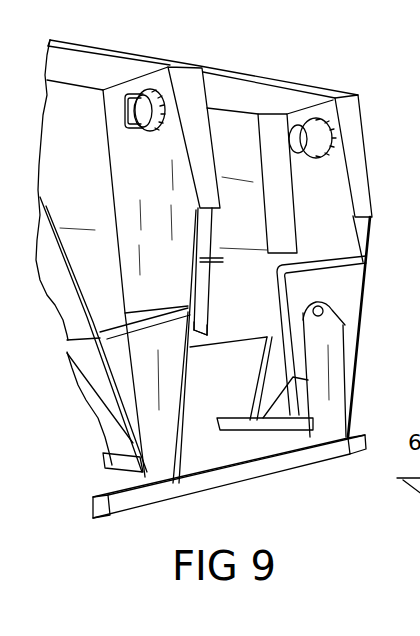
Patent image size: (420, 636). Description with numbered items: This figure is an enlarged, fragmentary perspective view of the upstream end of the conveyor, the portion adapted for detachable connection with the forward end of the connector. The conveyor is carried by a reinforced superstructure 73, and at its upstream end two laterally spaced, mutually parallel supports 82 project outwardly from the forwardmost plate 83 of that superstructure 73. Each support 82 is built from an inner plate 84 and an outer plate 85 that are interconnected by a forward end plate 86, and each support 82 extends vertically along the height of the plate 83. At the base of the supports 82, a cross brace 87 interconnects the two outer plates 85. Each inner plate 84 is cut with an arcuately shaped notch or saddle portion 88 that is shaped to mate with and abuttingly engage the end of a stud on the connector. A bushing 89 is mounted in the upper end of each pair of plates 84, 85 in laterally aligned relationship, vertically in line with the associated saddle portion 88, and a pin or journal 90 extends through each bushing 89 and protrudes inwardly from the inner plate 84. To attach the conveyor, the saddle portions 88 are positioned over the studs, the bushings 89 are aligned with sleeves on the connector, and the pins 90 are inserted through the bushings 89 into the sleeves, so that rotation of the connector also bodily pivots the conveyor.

The superstructure 73 is at (62, 338).
The support 82 is at (200, 63).
The forwardmost plate 83 is at (75, 122).
The inner plate 84 is at (340, 231).
The outer plate 85 is at (127, 188).
The forward end plate 86 is at (200, 137).
The cross brace 87 is at (291, 464).
The saddle portion 88 is at (318, 306).
The bushing 89 is at (330, 131).
The pin 90 is at (152, 115).